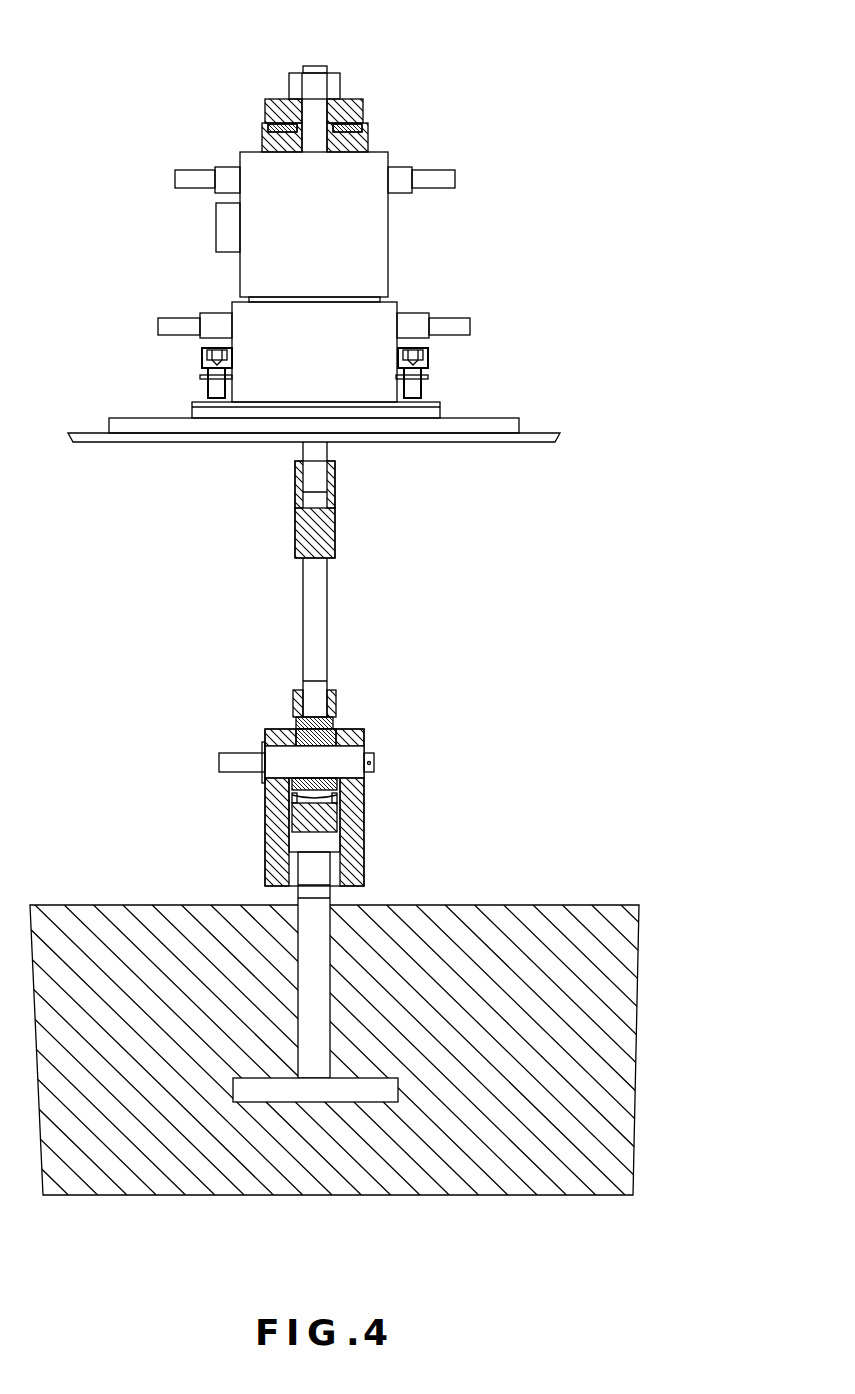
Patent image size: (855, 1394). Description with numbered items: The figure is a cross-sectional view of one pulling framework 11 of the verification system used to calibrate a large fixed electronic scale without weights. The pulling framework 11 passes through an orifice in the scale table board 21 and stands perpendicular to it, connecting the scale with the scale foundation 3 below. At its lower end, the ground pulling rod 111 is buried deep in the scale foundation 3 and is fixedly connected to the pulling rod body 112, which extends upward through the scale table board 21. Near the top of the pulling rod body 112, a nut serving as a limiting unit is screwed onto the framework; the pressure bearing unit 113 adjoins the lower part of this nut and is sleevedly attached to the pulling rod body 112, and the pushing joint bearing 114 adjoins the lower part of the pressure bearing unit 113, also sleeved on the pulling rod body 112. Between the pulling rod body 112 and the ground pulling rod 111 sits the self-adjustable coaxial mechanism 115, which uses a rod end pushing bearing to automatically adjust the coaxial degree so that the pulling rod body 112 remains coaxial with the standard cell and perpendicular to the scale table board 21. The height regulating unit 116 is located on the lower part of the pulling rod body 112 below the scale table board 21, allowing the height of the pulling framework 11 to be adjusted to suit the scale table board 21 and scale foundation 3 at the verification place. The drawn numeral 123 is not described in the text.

The scale foundation 3 is at (157, 940).
The pulling framework 11 is at (586, 56).
The scale table board 21 is at (175, 437).
The ground pulling rod 111 is at (312, 1043).
The pulling rod body 112 is at (327, 68).
The pressure bearing unit 113 is at (363, 108).
The pushing joint bearing 114 is at (368, 140).
The self-adjustable coaxial mechanism 115 is at (362, 820).
The height regulating unit 116 is at (333, 525).
The lock nut 123 is at (297, 83).